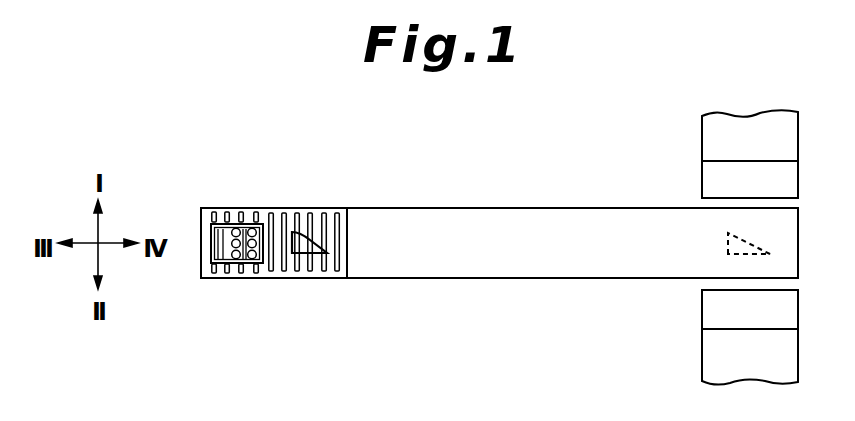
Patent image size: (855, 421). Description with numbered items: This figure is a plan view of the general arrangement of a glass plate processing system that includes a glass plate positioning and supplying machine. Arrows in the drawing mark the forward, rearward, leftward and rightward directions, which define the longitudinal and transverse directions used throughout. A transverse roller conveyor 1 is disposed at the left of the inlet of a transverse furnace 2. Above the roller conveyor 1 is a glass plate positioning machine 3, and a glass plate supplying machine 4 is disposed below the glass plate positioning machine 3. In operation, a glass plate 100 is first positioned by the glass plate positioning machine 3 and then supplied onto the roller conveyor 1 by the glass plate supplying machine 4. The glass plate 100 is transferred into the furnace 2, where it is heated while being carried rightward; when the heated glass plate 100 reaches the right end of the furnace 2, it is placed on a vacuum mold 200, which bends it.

The transverse roller conveyor 1 is at (307, 203).
The transverse furnace 2 is at (521, 232).
The glass plate positioning machine 3 is at (238, 223).
The glass plate supplying machine 4 is at (252, 230).
The glass plate 100 is at (305, 256).
The vacuum mold 200 is at (726, 254).